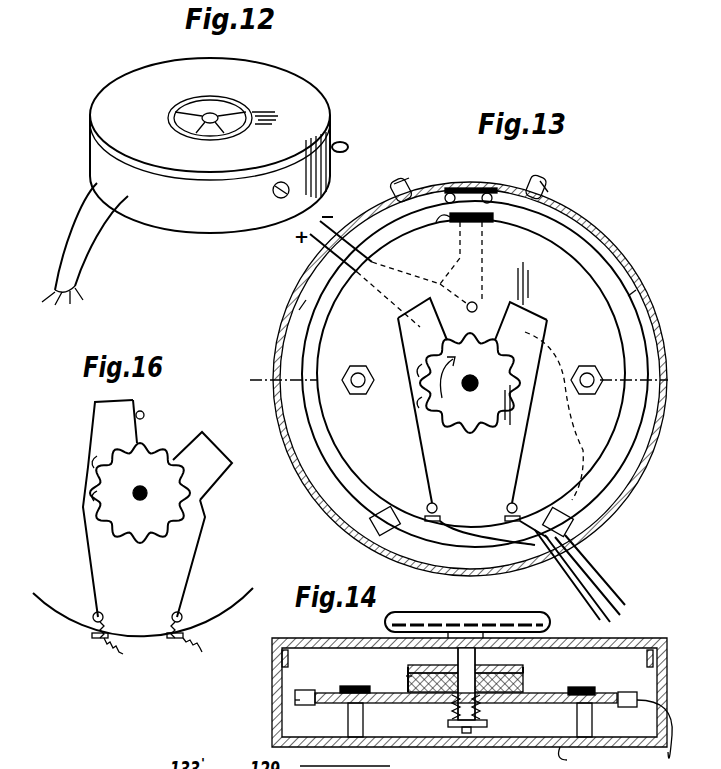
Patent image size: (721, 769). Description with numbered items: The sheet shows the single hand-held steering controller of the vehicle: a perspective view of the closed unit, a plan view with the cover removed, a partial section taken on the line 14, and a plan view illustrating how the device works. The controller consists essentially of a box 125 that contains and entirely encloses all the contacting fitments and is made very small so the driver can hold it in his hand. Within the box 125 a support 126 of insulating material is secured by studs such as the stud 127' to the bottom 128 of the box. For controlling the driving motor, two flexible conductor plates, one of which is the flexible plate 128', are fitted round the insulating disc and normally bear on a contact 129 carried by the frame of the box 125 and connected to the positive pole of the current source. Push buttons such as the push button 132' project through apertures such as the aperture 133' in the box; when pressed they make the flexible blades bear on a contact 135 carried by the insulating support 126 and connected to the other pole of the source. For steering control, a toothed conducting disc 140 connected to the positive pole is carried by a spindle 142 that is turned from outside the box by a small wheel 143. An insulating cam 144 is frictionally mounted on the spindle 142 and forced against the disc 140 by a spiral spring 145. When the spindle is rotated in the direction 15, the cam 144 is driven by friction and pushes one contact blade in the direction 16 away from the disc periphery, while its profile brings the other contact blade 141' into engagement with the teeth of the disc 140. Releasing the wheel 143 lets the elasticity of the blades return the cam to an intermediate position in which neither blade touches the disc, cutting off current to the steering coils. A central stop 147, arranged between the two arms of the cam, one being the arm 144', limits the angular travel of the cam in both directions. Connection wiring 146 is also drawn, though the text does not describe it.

In FIG. 13, the section line 14 is at (463, 371).
In FIG. 13, the direction of rotation 15 is at (446, 382).
In FIG. 13, the direction of cam push 16 is at (538, 380).
In FIG. 12, the box 125 is at (203, 218).
In FIG. 13, the box 125 is at (297, 462).
In FIG. 14, the box 125 is at (277, 690).
In FIG. 13, the support 126 is at (553, 265).
In FIG. 16, the support 126 is at (65, 612).
In FIG. 14, the support 126 is at (553, 693).
In FIG. 14, the stud 127' is at (331, 711).
In FIG. 14, the bottom 128 is at (578, 758).
In FIG. 13, the flexible plate 128' is at (271, 294).
In FIG. 14, the flexible plate 128' is at (258, 719).
In FIG. 13, the contact 129 is at (462, 186).
In FIG. 12, the push button 132' is at (348, 124).
In FIG. 13, the push button 132' is at (405, 160).
In FIG. 13, the aperture 133' is at (380, 189).
In FIG. 13, the contact 135 is at (437, 220).
In FIG. 13, the toothed conducting disc 140 is at (533, 350).
In FIG. 16, the toothed conducting disc 140 is at (128, 532).
In FIG. 14, the toothed conducting disc 140 is at (410, 665).
In FIG. 13, the contact blade 141' is at (408, 419).
In FIG. 16, the contact blade 141' is at (83, 560).
In FIG. 13, the spindle 142 is at (472, 396).
In FIG. 16, the spindle 142 is at (153, 499).
In FIG. 14, the spindle 142 is at (452, 707).
In FIG. 12, the small wheel 143 is at (214, 112).
In FIG. 14, the small wheel 143 is at (480, 606).
In FIG. 13, the insulating cam 144 is at (389, 400).
In FIG. 16, the insulating cam 144 is at (62, 480).
In FIG. 14, the insulating cam 144 is at (389, 704).
In FIG. 13, the cam arm 144' is at (542, 320).
In FIG. 16, the cam arm 144' is at (209, 455).
In FIG. 14, the spiral spring 145 is at (481, 713).
In FIG. 13, the connection wire 146 is at (411, 292).
In FIG. 13, the central stop 147 is at (478, 303).
In FIG. 16, the central stop 147 is at (144, 414).